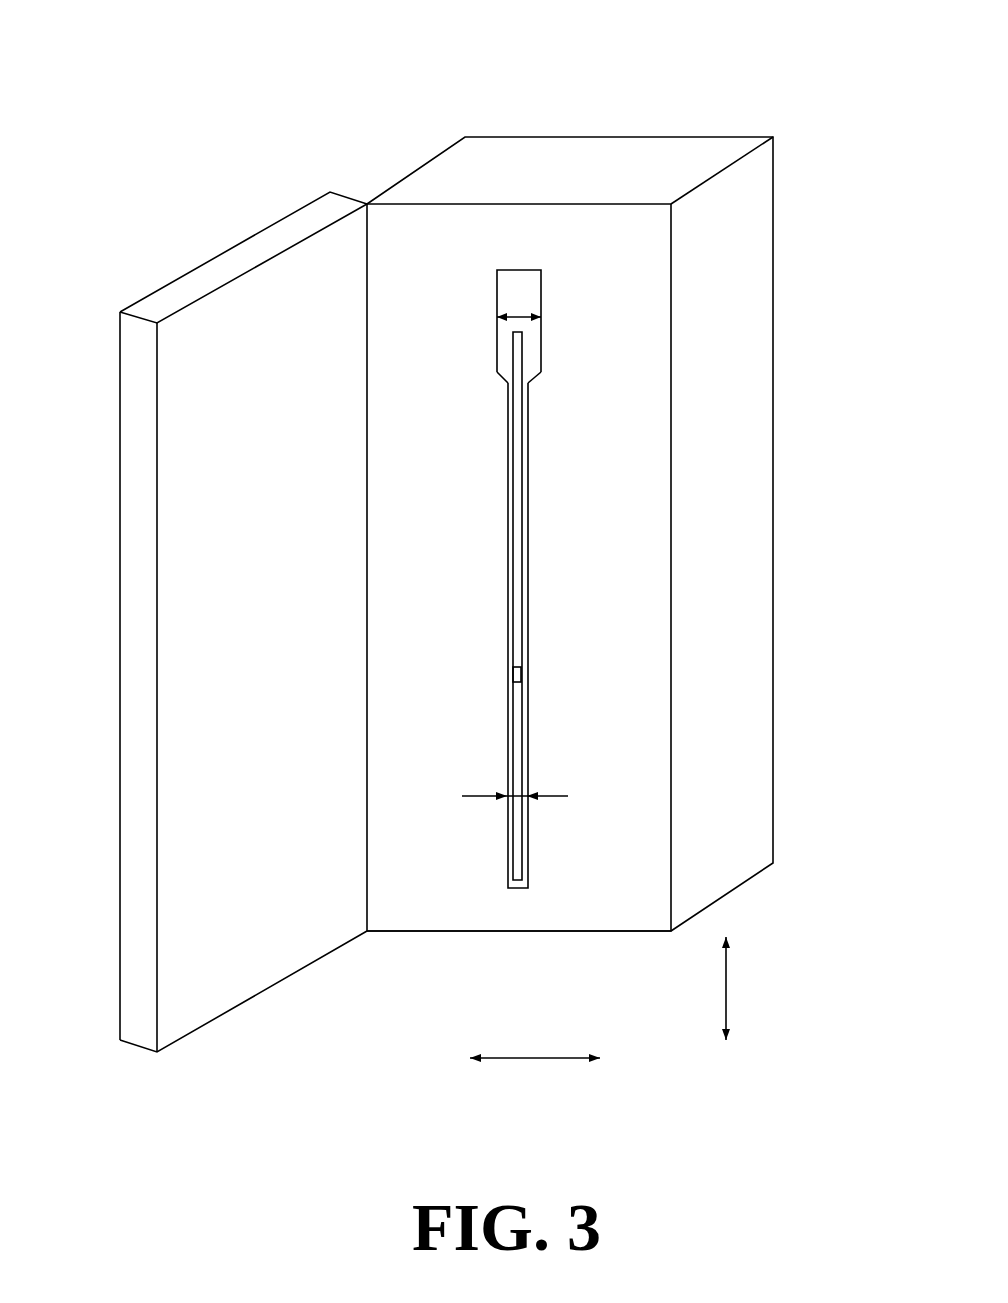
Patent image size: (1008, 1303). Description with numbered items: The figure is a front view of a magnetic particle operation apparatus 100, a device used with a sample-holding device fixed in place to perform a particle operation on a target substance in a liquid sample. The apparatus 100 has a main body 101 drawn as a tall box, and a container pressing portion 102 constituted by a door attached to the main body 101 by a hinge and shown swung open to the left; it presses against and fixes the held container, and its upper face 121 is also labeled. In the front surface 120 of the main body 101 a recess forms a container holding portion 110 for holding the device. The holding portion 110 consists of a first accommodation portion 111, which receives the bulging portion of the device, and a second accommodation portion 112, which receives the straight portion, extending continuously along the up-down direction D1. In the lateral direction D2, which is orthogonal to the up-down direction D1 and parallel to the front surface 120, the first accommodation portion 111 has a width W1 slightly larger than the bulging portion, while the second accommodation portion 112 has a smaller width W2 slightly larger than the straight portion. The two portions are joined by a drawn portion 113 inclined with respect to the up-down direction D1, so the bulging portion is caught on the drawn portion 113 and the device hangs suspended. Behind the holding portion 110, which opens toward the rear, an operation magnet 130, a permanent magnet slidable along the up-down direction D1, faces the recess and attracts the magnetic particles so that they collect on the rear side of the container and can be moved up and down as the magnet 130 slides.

The magnetic particle operation apparatus 100 is at (628, 100).
The front surface 120 is at (443, 230).
The side panel top surface 121 is at (257, 295).
The main body 101 is at (612, 933).
The container pressing portion 102 is at (267, 988).
The container holding portion 110 is at (531, 513).
The first accommodation portion 111 is at (496, 342).
The second accommodation portion 112 is at (508, 572).
The drawn portion 113 is at (500, 372).
The operation magnet 130 is at (512, 677).
The width of the first accommodation portion W1 is at (521, 313).
The width of the second accommodation portion W2 is at (519, 784).
The up-down direction D1 is at (733, 987).
The lateral direction D2 is at (535, 1060).